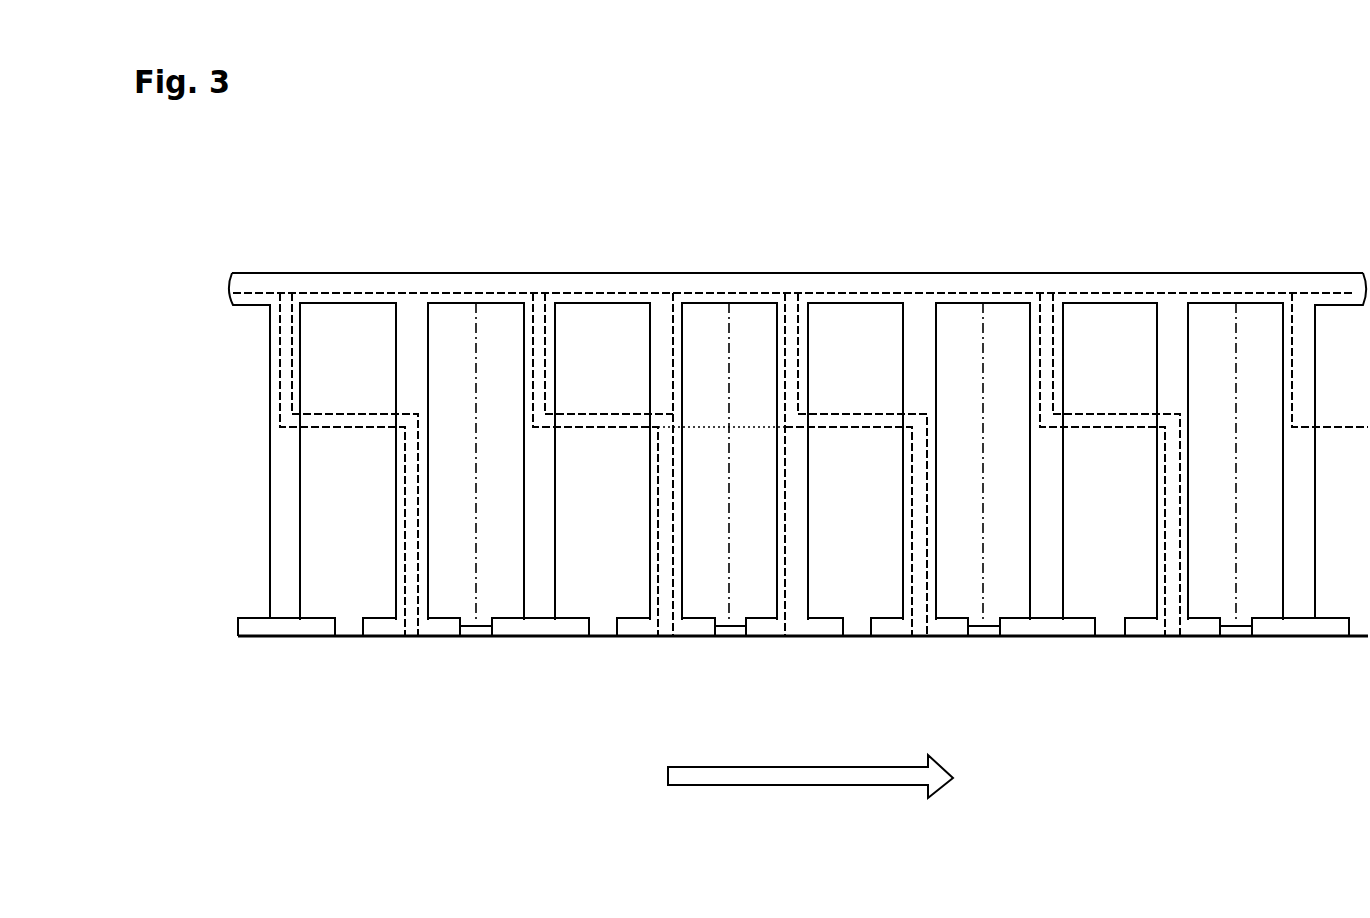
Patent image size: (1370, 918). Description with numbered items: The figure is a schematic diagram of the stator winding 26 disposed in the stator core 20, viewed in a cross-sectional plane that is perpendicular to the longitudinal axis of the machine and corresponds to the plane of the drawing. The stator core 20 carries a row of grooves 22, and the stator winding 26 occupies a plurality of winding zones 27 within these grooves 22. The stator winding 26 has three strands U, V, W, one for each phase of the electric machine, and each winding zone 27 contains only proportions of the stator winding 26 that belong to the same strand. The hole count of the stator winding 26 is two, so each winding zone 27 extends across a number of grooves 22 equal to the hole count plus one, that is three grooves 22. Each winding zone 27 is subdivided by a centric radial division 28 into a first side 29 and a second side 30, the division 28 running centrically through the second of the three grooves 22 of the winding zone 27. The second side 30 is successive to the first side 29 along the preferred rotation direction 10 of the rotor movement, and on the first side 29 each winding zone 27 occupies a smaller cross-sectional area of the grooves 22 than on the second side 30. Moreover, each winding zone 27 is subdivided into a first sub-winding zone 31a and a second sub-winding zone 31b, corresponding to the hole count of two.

The preferred rotation direction 10 is at (780, 786).
The stator core 20 is at (281, 272).
The grooves 22 is at (350, 303).
The stator winding 26 is at (334, 504).
The winding zones 27 is at (419, 292).
The centric radial division 28 is at (476, 600).
The first side 29 is at (623, 535).
The second side 30 is at (843, 569).
The first sub-winding zone 31a is at (697, 530).
The second sub-winding zone 31b is at (757, 388).